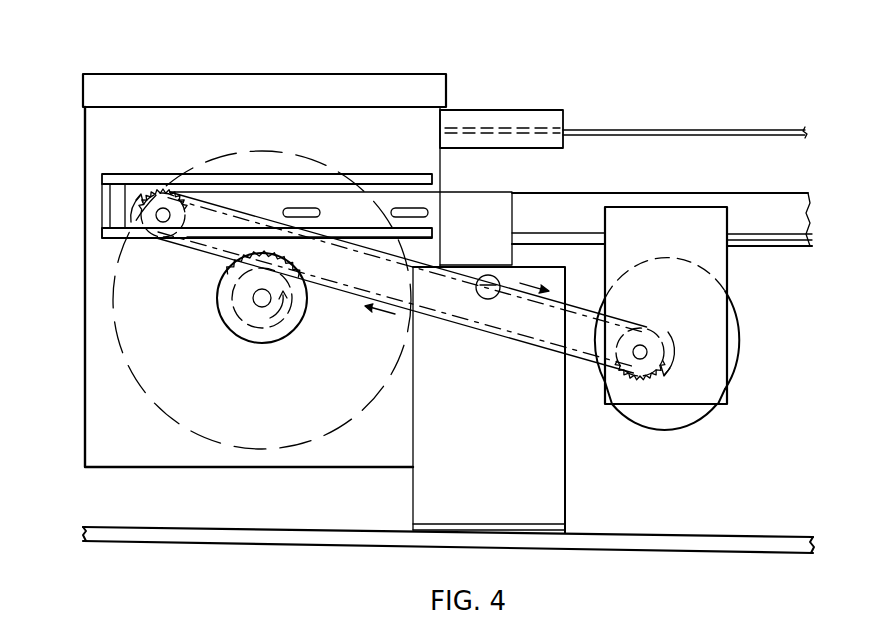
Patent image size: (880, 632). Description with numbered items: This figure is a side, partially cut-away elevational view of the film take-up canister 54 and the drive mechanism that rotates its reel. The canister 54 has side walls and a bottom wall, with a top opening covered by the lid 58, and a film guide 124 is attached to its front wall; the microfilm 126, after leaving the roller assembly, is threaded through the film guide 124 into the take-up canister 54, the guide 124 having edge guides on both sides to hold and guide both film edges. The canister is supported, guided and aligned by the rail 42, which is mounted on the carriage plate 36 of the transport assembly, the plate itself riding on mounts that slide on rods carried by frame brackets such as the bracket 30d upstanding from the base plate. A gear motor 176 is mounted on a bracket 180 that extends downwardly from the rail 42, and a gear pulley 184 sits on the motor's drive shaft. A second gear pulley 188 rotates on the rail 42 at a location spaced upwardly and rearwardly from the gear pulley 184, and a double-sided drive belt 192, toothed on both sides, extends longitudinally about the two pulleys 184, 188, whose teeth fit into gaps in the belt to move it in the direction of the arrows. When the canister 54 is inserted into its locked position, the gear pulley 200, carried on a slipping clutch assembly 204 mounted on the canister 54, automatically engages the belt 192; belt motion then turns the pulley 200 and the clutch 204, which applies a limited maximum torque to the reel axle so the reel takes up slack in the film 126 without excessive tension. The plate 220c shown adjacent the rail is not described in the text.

The film take-up canister 54 is at (85, 275).
The lid 58 is at (279, 83).
The film guide 124 is at (507, 118).
The film 126 is at (700, 130).
The slide plate 220c is at (493, 250).
The rail 42 is at (788, 200).
The carriage plate 36 is at (783, 246).
The second gear pulley 188 is at (172, 200).
The gear pulley 200 is at (243, 300).
The slipping clutch assembly 204 is at (272, 343).
The double-sided drive belt 192 is at (530, 362).
The bracket 180 is at (715, 330).
The gear motor 176 is at (730, 367).
The gear pulley 184 is at (641, 375).
The bracket 30d is at (555, 498).